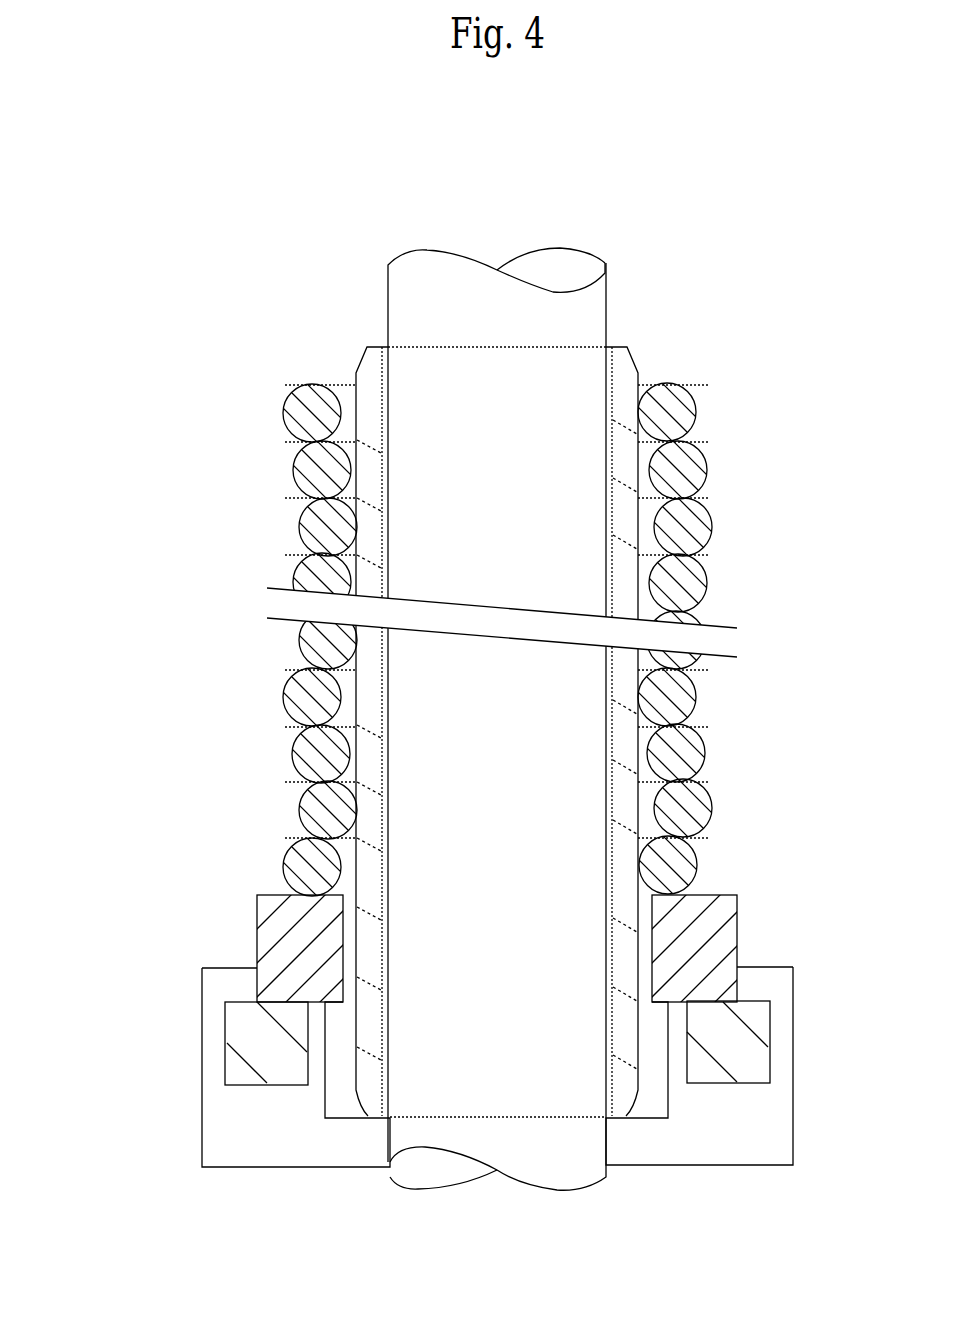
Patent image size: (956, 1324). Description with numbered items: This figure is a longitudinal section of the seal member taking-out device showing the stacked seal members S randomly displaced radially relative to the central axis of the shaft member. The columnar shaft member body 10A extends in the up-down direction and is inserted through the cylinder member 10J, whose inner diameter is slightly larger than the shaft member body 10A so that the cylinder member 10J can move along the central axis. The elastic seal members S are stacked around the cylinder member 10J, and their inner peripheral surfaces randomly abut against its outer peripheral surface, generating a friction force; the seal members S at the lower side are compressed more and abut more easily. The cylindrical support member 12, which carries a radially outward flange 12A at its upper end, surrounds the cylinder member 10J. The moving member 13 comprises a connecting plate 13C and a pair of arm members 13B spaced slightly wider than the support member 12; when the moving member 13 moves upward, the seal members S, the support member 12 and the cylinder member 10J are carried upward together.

The shaft member body 10A is at (575, 312).
The cylinder member 10J is at (625, 368).
The seal member S is at (303, 567).
The support member 12 is at (477, 912).
The flange 12A is at (268, 936).
The moving member 13 is at (435, 1115).
The arm member 13B is at (737, 1053).
The connecting plate 13C is at (225, 1131).